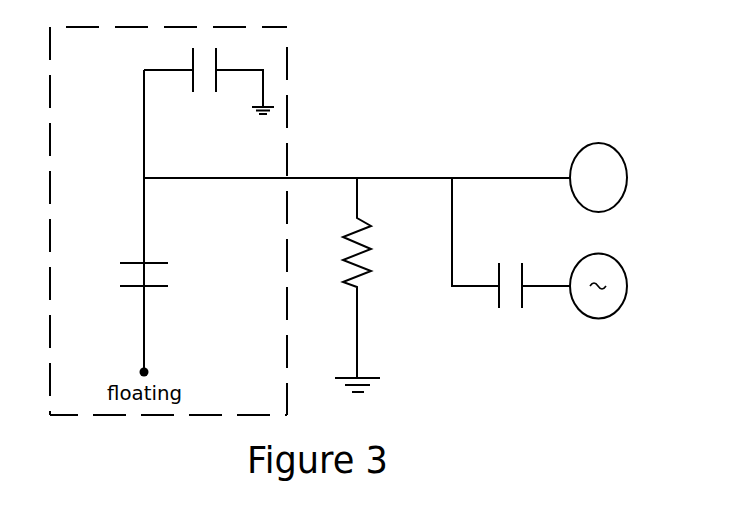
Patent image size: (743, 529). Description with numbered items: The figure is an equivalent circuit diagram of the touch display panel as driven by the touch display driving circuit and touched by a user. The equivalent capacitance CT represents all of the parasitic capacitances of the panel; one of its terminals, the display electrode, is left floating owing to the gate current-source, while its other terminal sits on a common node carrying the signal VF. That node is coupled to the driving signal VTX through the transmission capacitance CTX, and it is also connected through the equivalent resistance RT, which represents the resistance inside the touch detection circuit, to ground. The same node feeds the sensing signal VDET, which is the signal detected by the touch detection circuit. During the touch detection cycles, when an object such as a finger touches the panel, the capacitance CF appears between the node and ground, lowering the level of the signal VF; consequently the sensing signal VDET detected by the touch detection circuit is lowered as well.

The finger capacitance CF is at (209, 84).
The equivalent capacitance CT is at (119, 288).
The equivalent resistance RT is at (372, 285).
The signal VF is at (503, 178).
The sensing signal VDET is at (634, 177).
The driving signal VTX is at (625, 286).
The transmission capacitance CTX is at (511, 265).